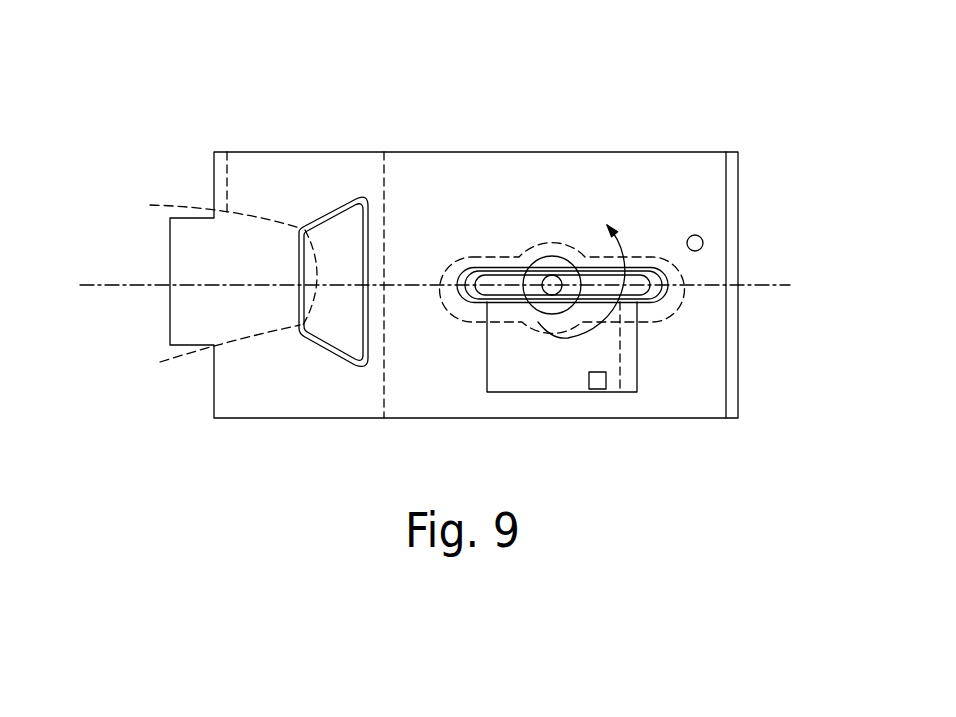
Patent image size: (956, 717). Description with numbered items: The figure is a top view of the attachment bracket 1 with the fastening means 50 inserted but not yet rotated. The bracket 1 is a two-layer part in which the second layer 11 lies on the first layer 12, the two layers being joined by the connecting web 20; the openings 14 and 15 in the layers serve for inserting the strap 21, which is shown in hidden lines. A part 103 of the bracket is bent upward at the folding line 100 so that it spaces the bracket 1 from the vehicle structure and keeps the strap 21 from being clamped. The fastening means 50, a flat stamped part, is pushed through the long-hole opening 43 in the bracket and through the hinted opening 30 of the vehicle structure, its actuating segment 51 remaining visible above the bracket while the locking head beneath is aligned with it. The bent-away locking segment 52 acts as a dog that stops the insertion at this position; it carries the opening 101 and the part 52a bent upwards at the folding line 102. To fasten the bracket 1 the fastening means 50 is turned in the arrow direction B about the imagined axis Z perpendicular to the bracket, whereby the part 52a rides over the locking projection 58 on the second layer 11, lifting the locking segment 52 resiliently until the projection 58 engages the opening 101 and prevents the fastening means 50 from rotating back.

The attachment bracket 1 is at (482, 87).
The second layer 11 is at (424, 175).
The first layer 12 is at (738, 178).
The opening 14 is at (343, 220).
The opening 15 is at (297, 228).
The connecting web 20 is at (186, 228).
The strap 21 is at (167, 355).
The opening 30 is at (453, 317).
The opening 43 is at (498, 270).
The fastening means 50 is at (571, 256).
The actuating segment 51 is at (541, 277).
The locking segment 52 is at (580, 386).
The bent part 52a is at (626, 378).
The locking projection 58 is at (703, 243).
The folding line 100 is at (377, 408).
The opening 101 is at (607, 389).
The folding line 102 is at (618, 322).
The part 103 is at (263, 407).
The arrow direction B is at (590, 330).
The imagined axis Z is at (546, 288).